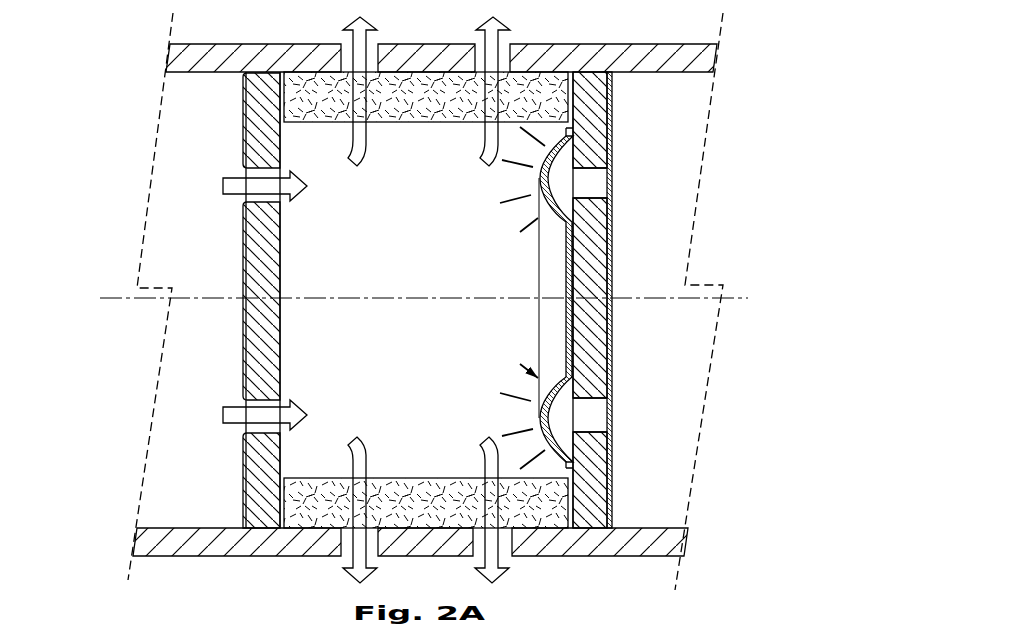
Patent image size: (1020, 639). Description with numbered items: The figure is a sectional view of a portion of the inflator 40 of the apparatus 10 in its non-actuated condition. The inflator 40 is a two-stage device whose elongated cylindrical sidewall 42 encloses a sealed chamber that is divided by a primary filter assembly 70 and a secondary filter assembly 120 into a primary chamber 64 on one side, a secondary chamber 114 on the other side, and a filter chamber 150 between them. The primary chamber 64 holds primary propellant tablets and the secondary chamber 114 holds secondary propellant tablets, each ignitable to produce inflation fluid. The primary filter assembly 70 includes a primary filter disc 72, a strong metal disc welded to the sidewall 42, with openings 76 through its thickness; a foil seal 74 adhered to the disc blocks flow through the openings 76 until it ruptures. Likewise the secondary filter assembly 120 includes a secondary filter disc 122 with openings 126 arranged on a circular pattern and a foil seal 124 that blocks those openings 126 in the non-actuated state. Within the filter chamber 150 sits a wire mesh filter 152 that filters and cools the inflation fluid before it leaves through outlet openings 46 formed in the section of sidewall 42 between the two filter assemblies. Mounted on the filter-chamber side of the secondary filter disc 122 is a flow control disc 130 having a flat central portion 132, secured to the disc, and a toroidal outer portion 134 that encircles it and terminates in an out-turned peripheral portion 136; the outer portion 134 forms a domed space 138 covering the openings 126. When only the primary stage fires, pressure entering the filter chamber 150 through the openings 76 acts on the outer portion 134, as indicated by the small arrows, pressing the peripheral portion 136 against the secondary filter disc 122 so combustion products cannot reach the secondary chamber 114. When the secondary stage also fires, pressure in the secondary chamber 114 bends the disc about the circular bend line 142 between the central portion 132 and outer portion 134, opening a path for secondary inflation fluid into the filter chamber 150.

The gas turbine engine / combustor assembly 10 is at (124, 111).
The inflator 40 is at (699, 301).
The cylindrical sidewall 42 is at (174, 542).
The outlet openings 46 is at (378, 45).
The primary chamber 64 is at (200, 158).
The primary filter assembly 70 is at (221, 343).
The primary filter disc 72 is at (266, 339).
The foil seal 74 is at (243, 255).
The openings 76 is at (277, 170).
The secondary chamber 114 is at (690, 156).
The secondary filter assembly 120 is at (615, 240).
The secondary filter disc 122 is at (590, 352).
The foil seal 124 is at (612, 378).
The openings 126 is at (594, 185).
The flow control disc 130 is at (566, 278).
The central portion 132 is at (566, 320).
The outer portion 134 is at (539, 180).
The peripheral portion 136 is at (566, 128).
The domed space 138 is at (560, 183).
The circular bend line 142 is at (565, 224).
The filter chamber 150 is at (360, 277).
The filter 152 is at (418, 102).